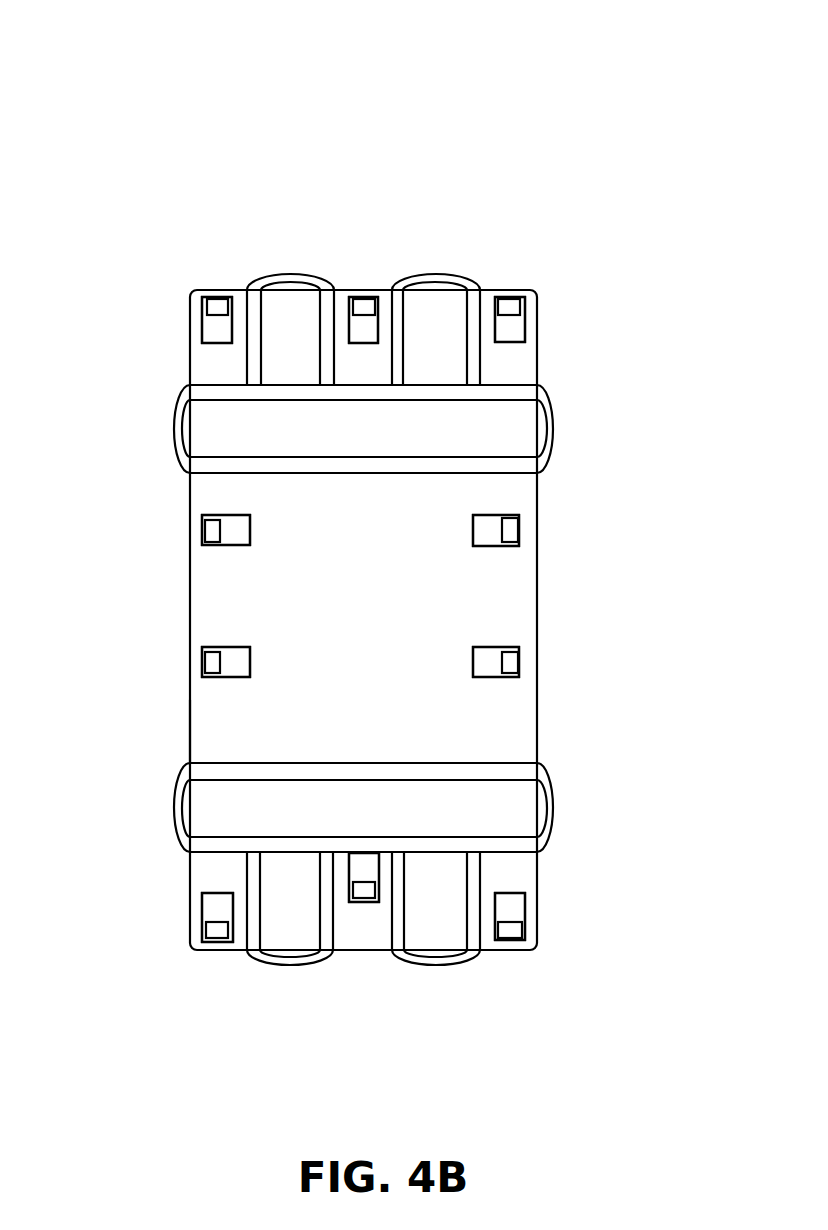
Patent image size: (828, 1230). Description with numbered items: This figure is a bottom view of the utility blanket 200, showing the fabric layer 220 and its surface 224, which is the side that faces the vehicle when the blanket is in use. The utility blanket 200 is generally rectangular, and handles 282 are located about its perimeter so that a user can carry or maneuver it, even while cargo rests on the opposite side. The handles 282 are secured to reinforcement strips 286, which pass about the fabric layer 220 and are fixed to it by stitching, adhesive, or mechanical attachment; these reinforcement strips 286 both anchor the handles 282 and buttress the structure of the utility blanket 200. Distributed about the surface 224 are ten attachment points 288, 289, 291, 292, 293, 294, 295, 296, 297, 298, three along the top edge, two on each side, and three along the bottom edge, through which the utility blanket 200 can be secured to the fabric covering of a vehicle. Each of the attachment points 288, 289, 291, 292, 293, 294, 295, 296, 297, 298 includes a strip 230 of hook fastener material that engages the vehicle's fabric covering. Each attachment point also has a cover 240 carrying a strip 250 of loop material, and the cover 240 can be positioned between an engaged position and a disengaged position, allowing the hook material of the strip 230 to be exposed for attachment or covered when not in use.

The utility blanket 200 is at (337, 92).
The fabric layer 220 is at (517, 585).
The surface 224 is at (212, 745).
The strip 230 is at (358, 305).
The cover 240 is at (365, 307).
The strip of loop material 250 is at (373, 306).
The handle 282 is at (313, 280).
The reinforcement strip 286 is at (248, 308).
The attachment point 288 is at (505, 297).
The attachment point 289 is at (367, 323).
The attachment point 291 is at (218, 337).
The attachment point 292 is at (232, 540).
The attachment point 293 is at (232, 672).
The attachment point 294 is at (215, 905).
The attachment point 295 is at (362, 862).
The attachment point 296 is at (515, 942).
The attachment point 297 is at (492, 675).
The attachment point 298 is at (492, 541).